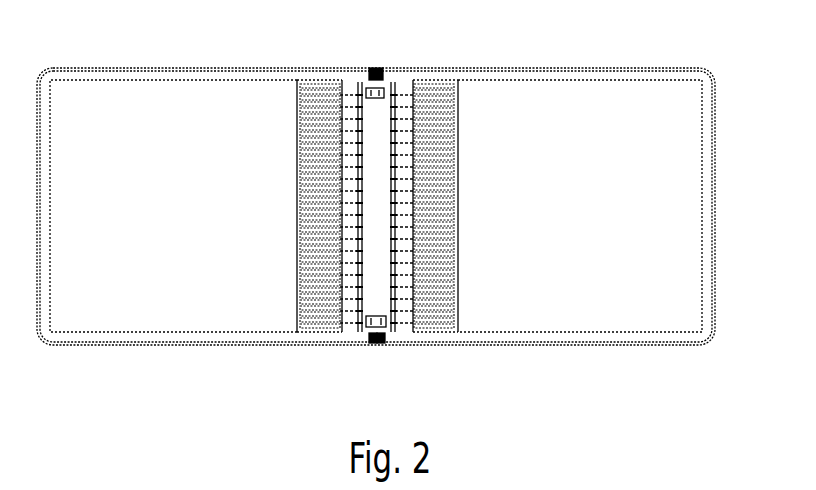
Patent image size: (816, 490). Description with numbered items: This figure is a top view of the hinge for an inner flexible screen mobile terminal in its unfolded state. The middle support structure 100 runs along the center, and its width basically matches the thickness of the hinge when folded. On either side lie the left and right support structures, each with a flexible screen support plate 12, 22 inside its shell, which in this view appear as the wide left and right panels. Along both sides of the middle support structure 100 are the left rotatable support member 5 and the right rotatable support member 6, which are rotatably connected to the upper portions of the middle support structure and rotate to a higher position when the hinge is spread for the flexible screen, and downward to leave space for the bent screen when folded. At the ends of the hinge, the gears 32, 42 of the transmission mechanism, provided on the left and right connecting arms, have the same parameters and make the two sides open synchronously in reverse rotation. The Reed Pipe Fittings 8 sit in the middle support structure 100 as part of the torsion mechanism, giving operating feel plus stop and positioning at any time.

The middle support structure 100 is at (389, 110).
The flexible screen support plate 12 is at (205, 143).
The flexible screen support plate 22 is at (570, 117).
The Reed Pipe Fittings 8 is at (375, 88).
The left rotatable support member 5 is at (349, 300).
The right rotatable support member 6 is at (410, 320).
The gear 32 is at (373, 343).
The gear 42 is at (382, 343).